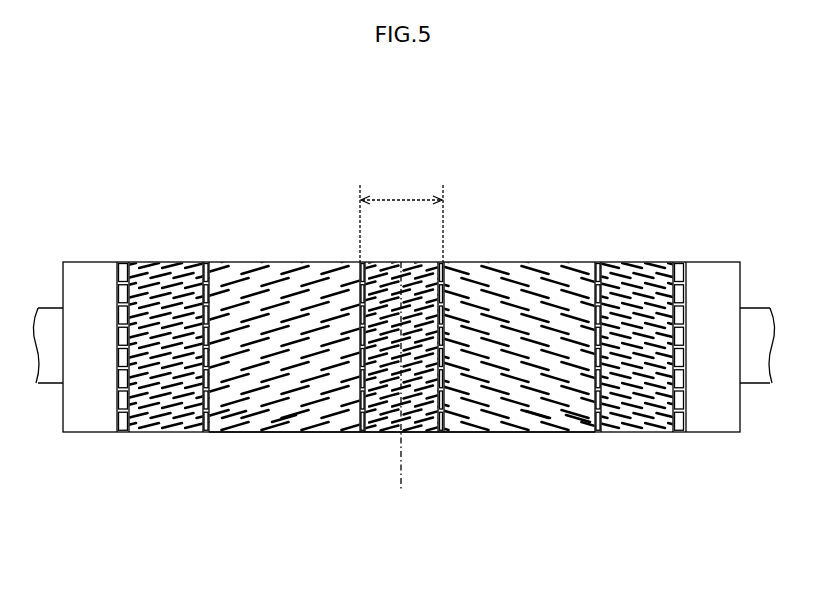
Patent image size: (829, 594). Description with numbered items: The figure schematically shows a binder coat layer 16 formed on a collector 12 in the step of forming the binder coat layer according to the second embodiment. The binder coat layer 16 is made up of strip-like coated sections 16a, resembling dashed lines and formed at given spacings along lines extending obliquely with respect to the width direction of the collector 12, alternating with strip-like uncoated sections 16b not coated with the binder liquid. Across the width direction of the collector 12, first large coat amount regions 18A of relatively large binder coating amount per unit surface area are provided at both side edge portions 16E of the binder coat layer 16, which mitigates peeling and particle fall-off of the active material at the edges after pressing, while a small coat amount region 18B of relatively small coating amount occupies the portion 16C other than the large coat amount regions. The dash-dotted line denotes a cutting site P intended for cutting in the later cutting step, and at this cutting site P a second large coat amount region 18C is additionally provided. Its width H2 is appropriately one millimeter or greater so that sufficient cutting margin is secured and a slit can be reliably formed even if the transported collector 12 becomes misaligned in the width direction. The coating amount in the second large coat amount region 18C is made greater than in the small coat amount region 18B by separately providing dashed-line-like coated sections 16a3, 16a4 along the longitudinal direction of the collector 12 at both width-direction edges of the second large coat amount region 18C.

The collector 12 is at (85, 262).
The binder coat layer 16 is at (332, 266).
The side edge portions 16E is at (136, 434).
The portion other than the large coat amount regions 16C is at (320, 434).
The strip-like coated sections 16a is at (283, 418).
The strip-like uncoated sections 16b is at (233, 416).
The coated section 16a3 is at (366, 420).
The coated section 16a4 is at (441, 420).
The first large coat amount regions 18A is at (203, 251).
The small coat amount region 18B is at (360, 251).
The second large coat amount region 18C is at (438, 251).
The width of the second large coat amount region H2 is at (401, 218).
The cutting site P is at (404, 482).